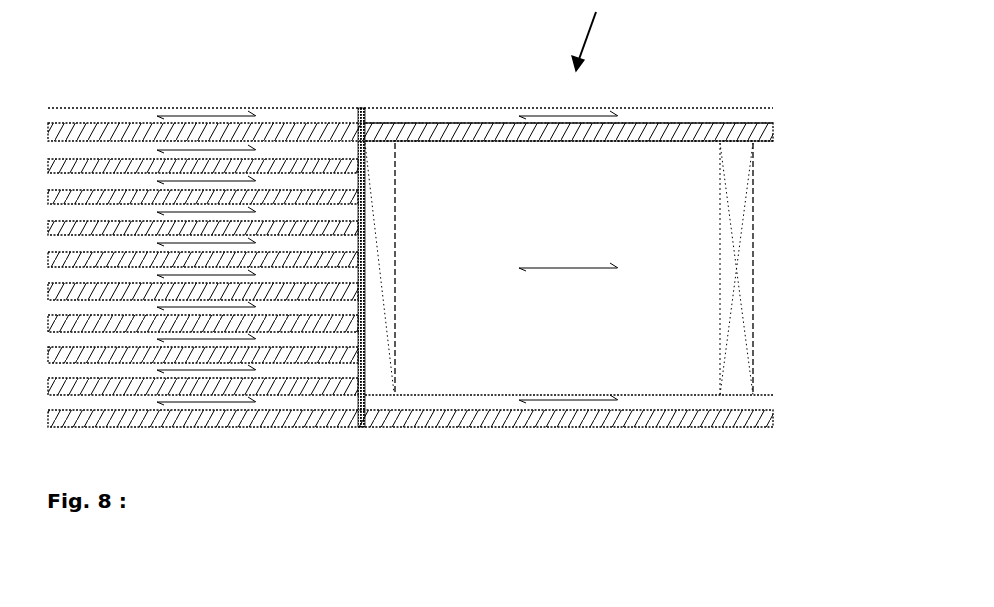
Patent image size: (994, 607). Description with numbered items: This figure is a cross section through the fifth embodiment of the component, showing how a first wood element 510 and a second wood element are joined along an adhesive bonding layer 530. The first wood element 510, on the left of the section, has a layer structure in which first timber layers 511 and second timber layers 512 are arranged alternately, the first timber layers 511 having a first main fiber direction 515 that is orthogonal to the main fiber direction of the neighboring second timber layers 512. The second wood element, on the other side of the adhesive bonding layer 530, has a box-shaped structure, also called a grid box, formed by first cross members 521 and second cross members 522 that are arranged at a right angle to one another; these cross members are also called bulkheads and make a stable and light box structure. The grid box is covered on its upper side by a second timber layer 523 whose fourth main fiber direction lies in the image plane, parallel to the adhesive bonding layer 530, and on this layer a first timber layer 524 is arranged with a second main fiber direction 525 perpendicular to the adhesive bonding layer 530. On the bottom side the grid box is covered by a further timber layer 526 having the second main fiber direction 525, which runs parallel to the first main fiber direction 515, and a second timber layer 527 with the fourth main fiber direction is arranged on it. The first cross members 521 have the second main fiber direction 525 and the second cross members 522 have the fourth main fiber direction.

The first wood element 510 is at (178, 80).
The first timber layers 511 is at (122, 118).
The second timber layers 512 is at (306, 118).
The first main fiber direction 515 is at (223, 117).
The adhesive bonding layer 530 is at (361, 122).
The second timber layer 523 is at (443, 130).
The second main fiber direction 525 is at (566, 118).
The first timber layer 524 is at (705, 127).
The first cross members 521 is at (568, 218).
The second cross members 522 is at (391, 170).
The further timber layer 526 is at (391, 398).
The second timber layer 527 is at (673, 412).